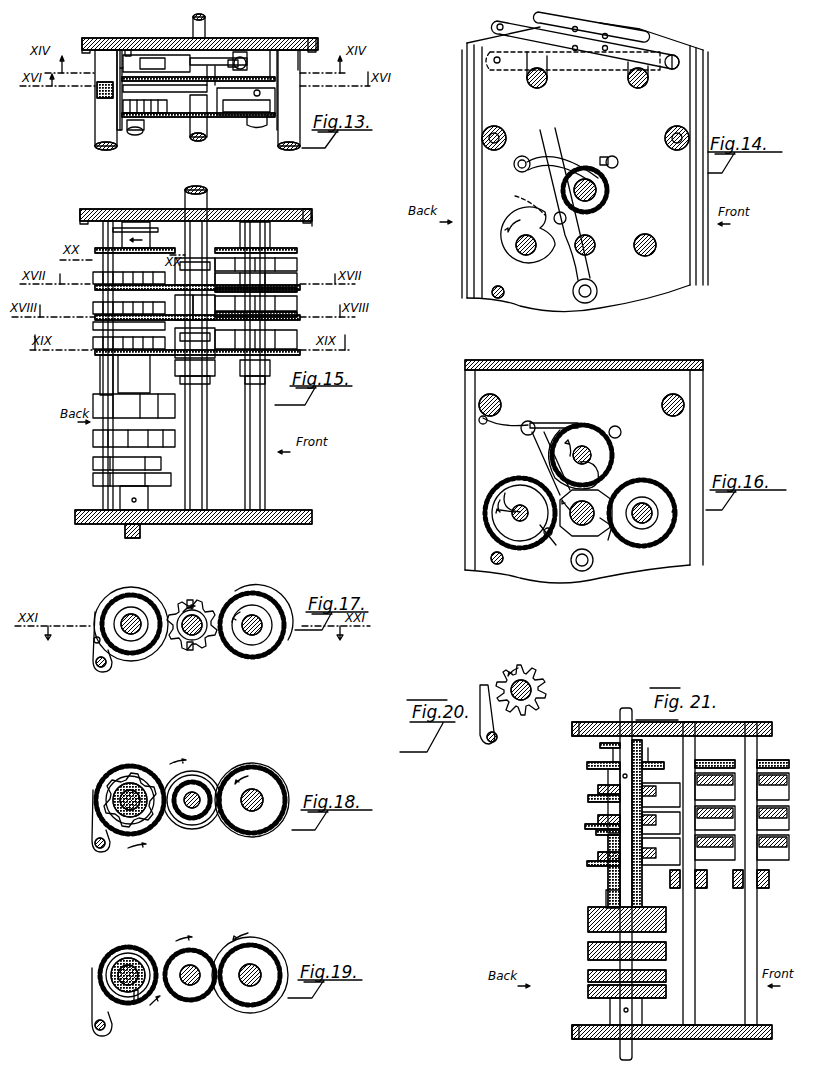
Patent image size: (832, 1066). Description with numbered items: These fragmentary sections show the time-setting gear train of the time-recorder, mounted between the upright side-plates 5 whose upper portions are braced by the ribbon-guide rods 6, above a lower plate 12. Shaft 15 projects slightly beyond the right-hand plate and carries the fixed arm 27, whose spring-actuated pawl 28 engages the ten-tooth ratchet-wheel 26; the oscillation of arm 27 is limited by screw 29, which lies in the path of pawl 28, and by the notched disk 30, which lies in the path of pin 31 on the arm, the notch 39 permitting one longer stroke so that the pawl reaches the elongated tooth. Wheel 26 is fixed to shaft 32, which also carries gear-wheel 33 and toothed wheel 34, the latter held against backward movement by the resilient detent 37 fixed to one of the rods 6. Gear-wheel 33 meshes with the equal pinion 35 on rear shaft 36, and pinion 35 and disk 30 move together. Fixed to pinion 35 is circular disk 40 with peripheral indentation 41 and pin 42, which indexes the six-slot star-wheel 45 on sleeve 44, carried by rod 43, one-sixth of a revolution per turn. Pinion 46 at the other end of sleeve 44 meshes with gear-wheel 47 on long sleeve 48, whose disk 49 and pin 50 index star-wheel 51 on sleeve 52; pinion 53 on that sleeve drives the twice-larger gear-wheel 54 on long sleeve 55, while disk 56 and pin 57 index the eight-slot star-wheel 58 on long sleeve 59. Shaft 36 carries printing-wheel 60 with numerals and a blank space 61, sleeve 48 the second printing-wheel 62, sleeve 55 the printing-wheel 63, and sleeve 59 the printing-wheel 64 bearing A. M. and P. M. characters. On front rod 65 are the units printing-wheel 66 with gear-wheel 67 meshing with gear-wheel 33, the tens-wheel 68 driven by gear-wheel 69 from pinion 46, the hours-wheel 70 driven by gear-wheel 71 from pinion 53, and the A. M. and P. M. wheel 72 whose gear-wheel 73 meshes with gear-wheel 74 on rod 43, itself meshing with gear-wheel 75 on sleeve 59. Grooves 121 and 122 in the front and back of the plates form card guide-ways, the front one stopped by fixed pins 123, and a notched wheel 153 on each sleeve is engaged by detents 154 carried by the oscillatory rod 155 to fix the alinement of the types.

In FIG. 13, the side-plate 5 is at (320, 40).
In FIG. 15, the side-plate 5 is at (284, 209).
In FIG. 14, the side-plate 5 is at (585, 167).
In FIG. 16, the side-plate 5 is at (584, 471).
In FIG. 21, the side-plate 5 is at (600, 722).
In FIG. 13, the rod 6 is at (95, 140).
In FIG. 14, the rod 6 is at (498, 132).
In FIG. 16, the rod 6 is at (496, 402).
In FIG. 15, the lower plate 12 is at (75, 516).
In FIG. 13, the shaft 15 is at (205, 22).
In FIG. 14, the shaft 15 is at (598, 290).
In FIG. 16, the shaft 15 is at (586, 572).
In FIG. 13, the ratchet-wheel 26 is at (178, 55).
In FIG. 14, the ratchet-wheel 26 is at (610, 187).
In FIG. 13, the arm 27 is at (160, 56).
In FIG. 14, the arm 27 is at (582, 268).
In FIG. 16, the arm 27 is at (534, 446).
In FIG. 13, the pawl 28 is at (160, 56).
In FIG. 14, the pawl 28 is at (566, 158).
In FIG. 16, the pawl 28 is at (558, 422).
In FIG. 13, the screw 29 is at (241, 57).
In FIG. 14, the screw 29 is at (615, 156).
In FIG. 16, the screw 29 is at (620, 430).
In FIG. 13, the notched disk 30 is at (127, 50).
In FIG. 15, the notched disk 30 is at (113, 226).
In FIG. 14, the notched disk 30 is at (528, 241).
In FIG. 21, the notched disk 30 is at (600, 746).
In FIG. 14, the pin 31 is at (522, 200).
In FIG. 13, the shaft 32 is at (194, 133).
In FIG. 14, the shaft 32 is at (596, 198).
In FIG. 16, the shaft 32 is at (592, 455).
In FIG. 13, the gear-wheel 33 is at (245, 52).
In FIG. 16, the gear-wheel 33 is at (596, 430).
In FIG. 13, the toothed wheel 34 is at (228, 118).
In FIG. 16, the toothed wheel 34 is at (612, 455).
In FIG. 15, the pinion 35 is at (122, 240).
In FIG. 16, the pinion 35 is at (512, 480).
In FIG. 21, the pinion 35 is at (587, 765).
In FIG. 13, the rear shaft 36 is at (134, 136).
In FIG. 15, the rear shaft 36 is at (146, 210).
In FIG. 17, the rear shaft 36 is at (120, 614).
In FIG. 18, the rear shaft 36 is at (118, 796).
In FIG. 19, the rear shaft 36 is at (118, 967).
In FIG. 14, the rear shaft 36 is at (515, 247).
In FIG. 16, the rear shaft 36 is at (512, 512).
In FIG. 21, the rear shaft 36 is at (626, 722).
In FIG. 13, the resilient detent 37 is at (99, 96).
In FIG. 16, the resilient detent 37 is at (512, 424).
In FIG. 14, the notch 39 is at (566, 222).
In FIG. 15, the circular disk 40 is at (95, 250).
In FIG. 16, the circular disk 40 is at (520, 513).
In FIG. 21, the circular disk 40 is at (608, 772).
In FIG. 16, the peripheral indentation 41 is at (521, 502).
In FIG. 16, the pin 42 is at (548, 540).
In FIG. 15, the rod 43 is at (207, 413).
In FIG. 17, the rod 43 is at (200, 615).
In FIG. 18, the rod 43 is at (196, 794).
In FIG. 19, the rod 43 is at (196, 966).
In FIG. 14, the rod 43 is at (596, 246).
In FIG. 16, the rod 43 is at (590, 530).
In FIG. 21, the rod 43 is at (690, 955).
In FIG. 15, the sleeve 44 is at (196, 285).
In FIG. 16, the sleeve 44 is at (604, 503).
In FIG. 21, the sleeve 44 is at (704, 762).
In FIG. 15, the star-wheel 45 is at (180, 258).
In FIG. 16, the star-wheel 45 is at (610, 530).
In FIG. 21, the star-wheel 45 is at (662, 762).
In FIG. 17, the pinion 46 is at (196, 600).
In FIG. 21, the pinion 46 is at (668, 790).
In FIG. 15, the gear-wheel 47 is at (95, 282).
In FIG. 17, the gear-wheel 47 is at (135, 592).
In FIG. 21, the gear-wheel 47 is at (588, 799).
In FIG. 17, the long sleeve 48 is at (142, 612).
In FIG. 18, the long sleeve 48 is at (142, 786).
In FIG. 19, the long sleeve 48 is at (136, 965).
In FIG. 21, the long sleeve 48 is at (608, 880).
In FIG. 15, the disk 49 is at (95, 305).
In FIG. 17, the disk 49 is at (131, 624).
In FIG. 21, the disk 49 is at (585, 826).
In FIG. 17, the pin 50 is at (96, 641).
In FIG. 15, the star-wheel 51 is at (179, 304).
In FIG. 17, the star-wheel 51 is at (185, 648).
In FIG. 21, the star-wheel 51 is at (661, 820).
In FIG. 15, the sleeve 52 is at (201, 304).
In FIG. 17, the sleeve 52 is at (200, 640).
In FIG. 18, the pinion 53 is at (190, 780).
In FIG. 21, the pinion 53 is at (661, 851).
In FIG. 15, the gear-wheel 54 is at (95, 326).
In FIG. 18, the gear-wheel 54 is at (105, 782).
In FIG. 21, the gear-wheel 54 is at (596, 833).
In FIG. 13, the long sleeve 55 is at (117, 72).
In FIG. 18, the long sleeve 55 is at (120, 778).
In FIG. 19, the long sleeve 55 is at (130, 950).
In FIG. 21, the long sleeve 55 is at (587, 863).
In FIG. 15, the disk 56 is at (186, 341).
In FIG. 18, the disk 56 is at (200, 826).
In FIG. 21, the disk 56 is at (715, 847).
In FIG. 18, the pin 57 is at (172, 822).
In FIG. 15, the star-wheel 58 is at (95, 343).
In FIG. 18, the star-wheel 58 is at (136, 776).
In FIG. 14, the star-wheel 58 is at (574, 168).
In FIG. 21, the star-wheel 58 is at (608, 850).
In FIG. 15, the long sleeve 59 is at (134, 374).
In FIG. 18, the long sleeve 59 is at (112, 810).
In FIG. 19, the long sleeve 59 is at (118, 955).
In FIG. 21, the long sleeve 59 is at (606, 896).
In FIG. 15, the printing-wheel 60 is at (93, 479).
In FIG. 21, the printing-wheel 60 is at (588, 996).
In FIG. 15, the blank space 61 is at (93, 484).
In FIG. 15, the second printing-wheel 62 is at (93, 462).
In FIG. 21, the second printing-wheel 62 is at (588, 976).
In FIG. 15, the printing-wheel 63 is at (93, 436).
In FIG. 21, the printing-wheel 63 is at (588, 950).
In FIG. 15, the printing-wheel 64 is at (93, 404).
In FIG. 21, the printing-wheel 64 is at (588, 918).
In FIG. 15, the rod 65 is at (265, 478).
In FIG. 17, the rod 65 is at (256, 635).
In FIG. 18, the rod 65 is at (256, 808).
In FIG. 19, the rod 65 is at (254, 965).
In FIG. 14, the rod 65 is at (652, 238).
In FIG. 16, the rod 65 is at (652, 510).
In FIG. 21, the rod 65 is at (757, 940).
In FIG. 15, the units printing-wheel 66 is at (297, 263).
In FIG. 21, the units printing-wheel 66 is at (780, 760).
In FIG. 15, the gear-wheel 67 is at (290, 249).
In FIG. 16, the gear-wheel 67 is at (650, 528).
In FIG. 21, the gear-wheel 67 is at (773, 786).
In FIG. 15, the tens-wheel 68 is at (297, 280).
In FIG. 17, the tens-wheel 68 is at (285, 652).
In FIG. 15, the gear-wheel 69 is at (290, 290).
In FIG. 17, the gear-wheel 69 is at (268, 595).
In FIG. 21, the gear-wheel 69 is at (715, 786).
In FIG. 15, the hours-wheel 70 is at (297, 301).
In FIG. 18, the hours-wheel 70 is at (286, 780).
In FIG. 21, the hours-wheel 70 is at (773, 818).
In FIG. 15, the gear-wheel 71 is at (297, 315).
In FIG. 18, the gear-wheel 71 is at (272, 770).
In FIG. 21, the gear-wheel 71 is at (715, 818).
In FIG. 15, the A. M. and P. M. wheel 72 is at (297, 338).
In FIG. 19, the A. M. and P. M. wheel 72 is at (280, 950).
In FIG. 21, the A. M. and P. M. wheel 72 is at (773, 847).
In FIG. 15, the gear-wheel 73 is at (270, 365).
In FIG. 19, the gear-wheel 73 is at (268, 990).
In FIG. 21, the gear-wheel 73 is at (770, 878).
In FIG. 15, the gear-wheel 74 is at (212, 376).
In FIG. 19, the gear-wheel 74 is at (194, 1000).
In FIG. 21, the gear-wheel 74 is at (704, 888).
In FIG. 15, the gear-wheel 75 is at (178, 368).
In FIG. 19, the gear-wheel 75 is at (138, 1004).
In FIG. 21, the gear-wheel 75 is at (670, 878).
In FIG. 13, the groove 121 is at (300, 58).
In FIG. 15, the groove 121 is at (312, 222).
In FIG. 14, the groove 121 is at (694, 95).
In FIG. 13, the groove 122 is at (84, 40).
In FIG. 15, the groove 122 is at (82, 212).
In FIG. 14, the groove 122 is at (476, 103).
In FIG. 21, the groove 122 is at (572, 730).
In FIG. 13, the fixed pin 123 is at (312, 36).
In FIG. 15, the fixed pin 123 is at (310, 208).
In FIG. 13, the notched wheel 153 is at (123, 110).
In FIG. 20, the notched wheel 153 is at (540, 672).
In FIG. 21, the notched wheel 153 is at (598, 789).
In FIG. 15, the detent 154 is at (95, 317).
In FIG. 20, the detent 154 is at (480, 686).
In FIG. 15, the oscillatory rod 155 is at (100, 381).
In FIG. 14, the oscillatory rod 155 is at (494, 298).
In FIG. 16, the oscillatory rod 155 is at (494, 566).
In FIG. 20, the oscillatory rod 155 is at (486, 744).